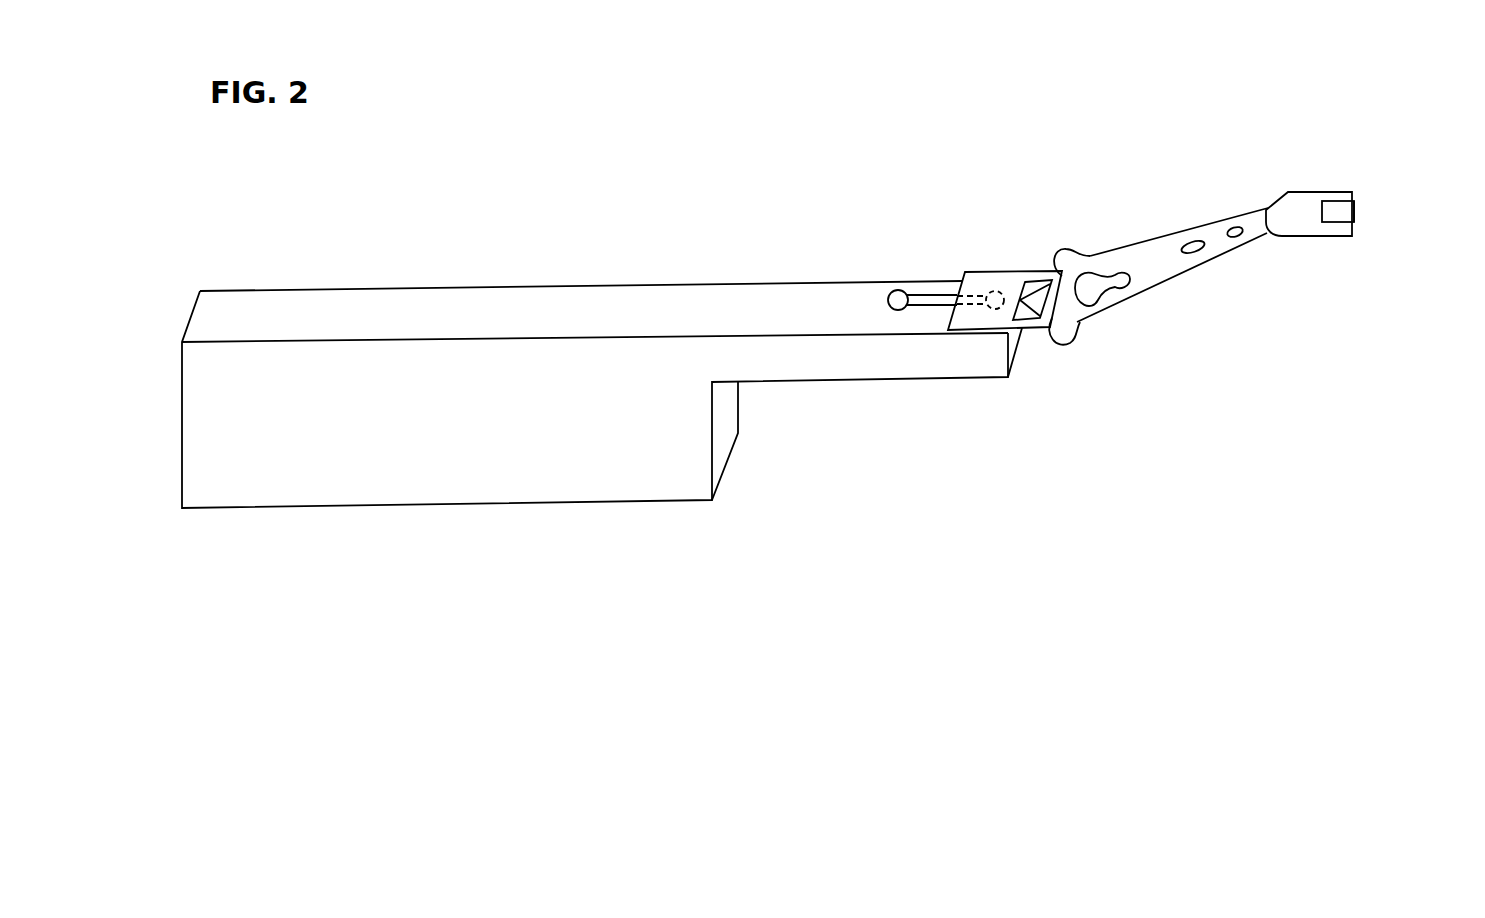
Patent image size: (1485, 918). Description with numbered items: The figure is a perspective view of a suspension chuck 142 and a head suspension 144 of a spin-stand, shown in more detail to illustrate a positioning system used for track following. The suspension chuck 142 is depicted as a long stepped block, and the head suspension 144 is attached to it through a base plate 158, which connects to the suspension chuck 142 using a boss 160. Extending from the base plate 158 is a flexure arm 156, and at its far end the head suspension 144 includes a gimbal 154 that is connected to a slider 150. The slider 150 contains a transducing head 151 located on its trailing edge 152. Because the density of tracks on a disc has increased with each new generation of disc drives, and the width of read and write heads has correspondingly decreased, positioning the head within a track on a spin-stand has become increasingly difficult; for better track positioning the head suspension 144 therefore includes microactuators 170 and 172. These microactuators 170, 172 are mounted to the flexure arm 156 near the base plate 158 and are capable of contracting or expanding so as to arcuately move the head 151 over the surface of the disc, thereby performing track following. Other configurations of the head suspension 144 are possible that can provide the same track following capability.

The suspension chuck 142 is at (443, 288).
The head suspension 144 is at (1261, 226).
The slider 150 is at (1337, 208).
The transducing head 151 is at (1355, 208).
The trailing edge 152 is at (1373, 247).
The gimbal 154 is at (1298, 202).
The flexure arm 156 is at (1153, 283).
The base plate 158 is at (978, 280).
The boss 160 is at (993, 292).
The microactuator 170 is at (1066, 284).
The microactuator 172 is at (1056, 320).